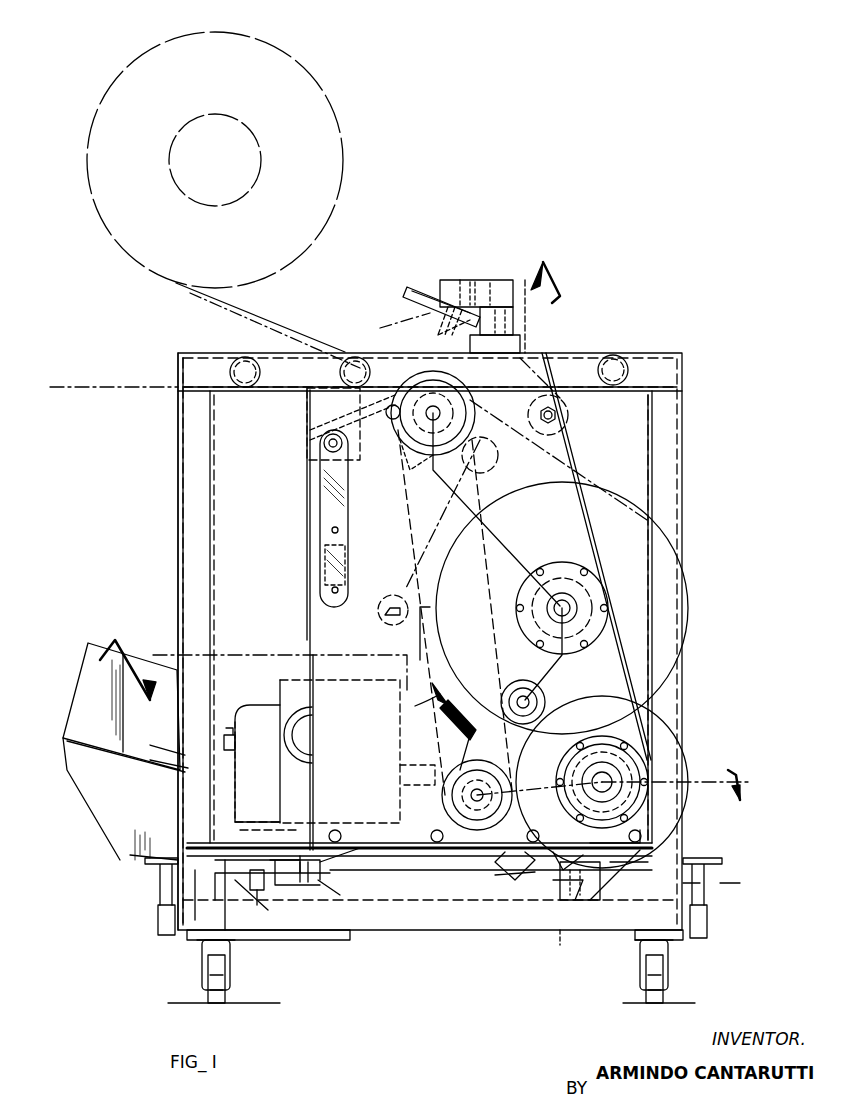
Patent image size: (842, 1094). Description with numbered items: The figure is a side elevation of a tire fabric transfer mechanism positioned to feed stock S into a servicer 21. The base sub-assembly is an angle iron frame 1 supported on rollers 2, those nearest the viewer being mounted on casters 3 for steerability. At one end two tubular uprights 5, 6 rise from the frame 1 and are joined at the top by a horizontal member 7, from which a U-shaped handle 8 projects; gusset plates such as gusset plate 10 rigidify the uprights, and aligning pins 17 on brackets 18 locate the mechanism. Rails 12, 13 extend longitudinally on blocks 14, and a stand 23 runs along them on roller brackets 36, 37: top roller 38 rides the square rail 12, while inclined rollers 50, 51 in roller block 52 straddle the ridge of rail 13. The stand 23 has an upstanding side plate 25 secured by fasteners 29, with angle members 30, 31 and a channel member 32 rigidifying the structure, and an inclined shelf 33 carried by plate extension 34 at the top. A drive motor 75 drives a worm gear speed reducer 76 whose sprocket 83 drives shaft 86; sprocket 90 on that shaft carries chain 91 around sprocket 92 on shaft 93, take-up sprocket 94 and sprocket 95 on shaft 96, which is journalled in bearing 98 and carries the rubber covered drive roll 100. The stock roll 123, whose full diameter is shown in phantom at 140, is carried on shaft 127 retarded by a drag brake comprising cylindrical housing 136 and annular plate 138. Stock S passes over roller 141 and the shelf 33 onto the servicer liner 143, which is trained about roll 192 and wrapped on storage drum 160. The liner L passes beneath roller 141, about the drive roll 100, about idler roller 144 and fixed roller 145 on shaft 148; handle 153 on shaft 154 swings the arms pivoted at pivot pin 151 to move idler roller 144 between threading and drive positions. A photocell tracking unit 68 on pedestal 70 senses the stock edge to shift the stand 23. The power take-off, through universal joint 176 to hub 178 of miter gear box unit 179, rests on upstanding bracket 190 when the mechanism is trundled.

The storage drum 160 is at (343, 150).
The servicer 21 is at (378, 206).
The liner 143 is at (270, 318).
The inclined shelf 33 is at (430, 330).
The plate extension 34 is at (428, 322).
The photocell tracking unit 68 is at (424, 276).
The pedestal 70 is at (516, 330).
The tubular upright 5 is at (165, 548).
The horizontal member 7 is at (640, 365).
The U-shaped handle 8 is at (572, 362).
The roll 192 is at (356, 362).
The angle iron frame 1 is at (445, 937).
The fastener 29 is at (460, 856).
The longitudinally extending angle member 31 is at (500, 875).
The longitudinally extending angle member 30 is at (226, 868).
The roller bracket 36 is at (292, 888).
The top roller 38 is at (292, 892).
The rail 12 is at (258, 897).
The gusset plate 10 is at (255, 932).
The roller bracket 37 is at (548, 862).
The inclined roller 50 is at (562, 878).
The rail 13 is at (565, 895).
The inclined roller 51 is at (592, 890).
The roller block 52 is at (592, 832).
The block 14 is at (565, 948).
The caster 3 is at (240, 955).
The roller 2 is at (226, 990).
The aligning pin 17 is at (160, 878).
The bracket 18 is at (158, 920).
The miter gear box unit 179 is at (103, 748).
The hub 178 is at (158, 758).
The upstanding bracket 190 is at (110, 840).
The tubular upright 6 is at (696, 556).
The upstanding side plate 25 is at (318, 628).
The stand 23 is at (288, 580).
The drive motor 75 is at (262, 712).
The worm gear speed reducer 76 is at (290, 780).
The universal joint 176 is at (260, 750).
The sprocket 83 is at (312, 738).
The chain 91 is at (420, 700).
The pivot pin 151 is at (392, 410).
The handle 153 is at (326, 494).
The shaft 154 is at (325, 443).
The channel member 32 is at (322, 550).
The drive roll 100 is at (355, 420).
The shaft 96 is at (418, 448).
The sprocket 95 is at (470, 424).
The bearing 98 is at (420, 468).
The roller 141 is at (560, 412).
The stock S is at (596, 460).
The idler roller 144 is at (492, 450).
The shaft 148 is at (388, 600).
The fixed roller 145 is at (442, 629).
The liner L is at (440, 538).
The shaft 127 is at (562, 590).
The annular plate 138 is at (600, 582).
The cylindrical housing 136 is at (602, 642).
The stock roll 123 is at (708, 612).
The full roll diameter 140 is at (688, 668).
The take-up sprocket 94 is at (548, 700).
The sprocket 92 is at (620, 732).
The shaft 93 is at (568, 770).
The sprocket 90 is at (450, 796).
The shaft 86 is at (488, 782).